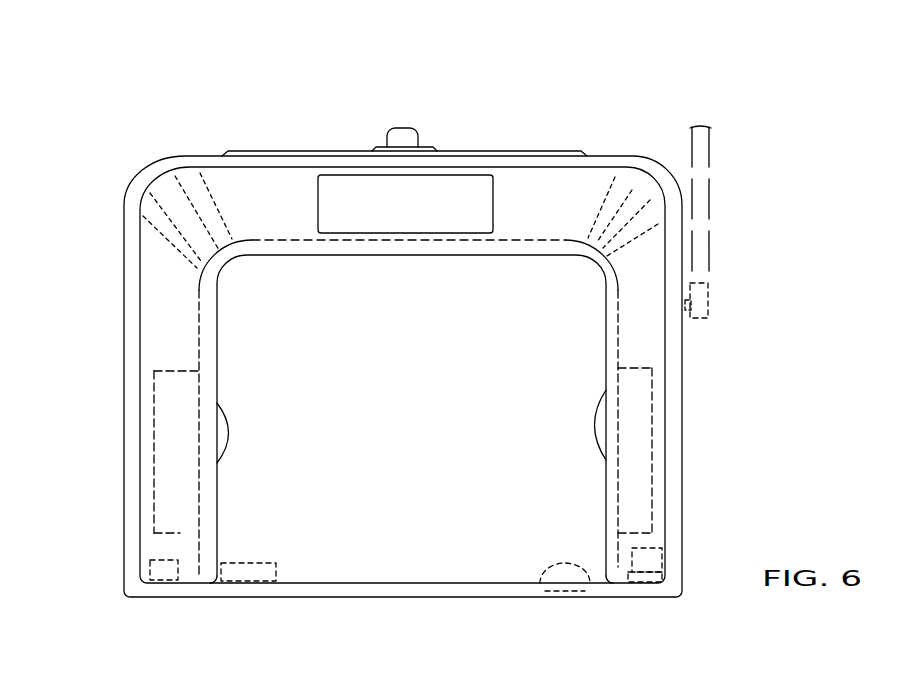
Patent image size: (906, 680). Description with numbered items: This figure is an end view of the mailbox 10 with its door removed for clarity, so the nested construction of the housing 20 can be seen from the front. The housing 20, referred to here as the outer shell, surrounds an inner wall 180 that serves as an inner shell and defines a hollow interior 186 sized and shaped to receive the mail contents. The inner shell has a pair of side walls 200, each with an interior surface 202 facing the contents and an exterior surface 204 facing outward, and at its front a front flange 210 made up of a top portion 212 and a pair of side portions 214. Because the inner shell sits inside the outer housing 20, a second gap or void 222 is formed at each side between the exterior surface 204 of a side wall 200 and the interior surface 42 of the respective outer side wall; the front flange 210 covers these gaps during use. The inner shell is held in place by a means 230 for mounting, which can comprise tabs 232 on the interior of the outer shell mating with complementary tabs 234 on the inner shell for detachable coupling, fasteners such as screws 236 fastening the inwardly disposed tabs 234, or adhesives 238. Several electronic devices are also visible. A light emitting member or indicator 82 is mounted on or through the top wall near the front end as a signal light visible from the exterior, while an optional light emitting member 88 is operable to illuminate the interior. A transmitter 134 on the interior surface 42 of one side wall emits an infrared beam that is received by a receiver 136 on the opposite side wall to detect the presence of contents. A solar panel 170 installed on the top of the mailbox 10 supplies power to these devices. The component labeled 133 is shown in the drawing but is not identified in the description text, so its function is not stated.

The mailbox 10 is at (636, 94).
The housing 20 is at (136, 161).
The interior surface 42 is at (157, 303).
The light emitting member or indicator 82 is at (418, 138).
The light emitting members 88 is at (228, 455).
The display window 133 is at (335, 205).
The transmitter 134 is at (628, 490).
The receiver 136 is at (183, 507).
The solar panel 170 is at (280, 151).
The inner wall 180 is at (471, 320).
The hollow interior 186 is at (423, 446).
The side walls 200 is at (212, 391).
The interior surface 202 is at (217, 341).
The exterior surface 204 is at (198, 368).
The front flange 210 is at (380, 256).
The top portion 212 is at (540, 208).
The side portions 214 is at (182, 313).
The second gap or void 222 is at (190, 290).
The means for mounting 230 is at (699, 537).
The tabs 232 is at (153, 562).
The tabs 234 is at (260, 563).
The screws 236 is at (563, 555).
The adhesives 238 is at (243, 583).